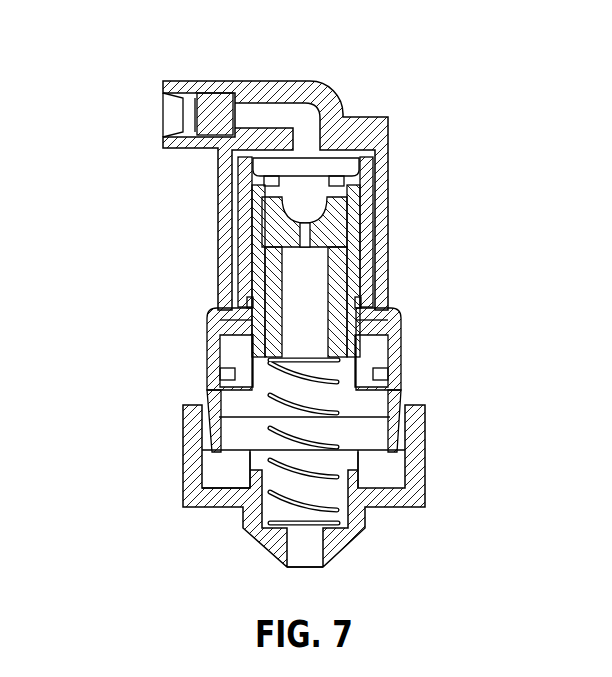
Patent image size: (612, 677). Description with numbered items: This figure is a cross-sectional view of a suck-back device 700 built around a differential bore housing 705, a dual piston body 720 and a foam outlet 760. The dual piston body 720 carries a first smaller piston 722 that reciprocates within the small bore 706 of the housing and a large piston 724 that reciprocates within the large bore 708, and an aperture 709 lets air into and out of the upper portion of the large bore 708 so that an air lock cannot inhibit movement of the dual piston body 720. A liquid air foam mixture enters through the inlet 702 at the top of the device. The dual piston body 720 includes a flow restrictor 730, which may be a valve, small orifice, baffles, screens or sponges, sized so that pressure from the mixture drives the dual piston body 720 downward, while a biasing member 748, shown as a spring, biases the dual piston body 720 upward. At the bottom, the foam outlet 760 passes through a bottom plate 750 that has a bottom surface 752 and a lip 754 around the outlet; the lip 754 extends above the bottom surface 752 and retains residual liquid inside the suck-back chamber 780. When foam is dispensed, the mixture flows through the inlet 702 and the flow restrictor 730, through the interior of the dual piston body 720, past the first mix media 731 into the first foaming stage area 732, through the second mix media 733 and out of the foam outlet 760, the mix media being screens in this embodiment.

The suck-back device 700 is at (450, 27).
The inlet 702 is at (165, 118).
The differential bore housing 705 is at (408, 297).
The small bore 706 is at (362, 228).
The large bore 708 is at (400, 388).
The aperture 709 is at (212, 356).
The dual piston body 720 is at (355, 255).
The first smaller piston 722 is at (360, 172).
The large piston 724 is at (387, 377).
The flow restrictor 730 is at (312, 217).
The first mix media 731 is at (283, 250).
The first foaming stage area 732 is at (300, 290).
The second mix media 733 is at (262, 308).
The biasing member 748 is at (395, 432).
The bottom plate 750 is at (425, 455).
The bottom surface 752 is at (215, 488).
The lip 754 is at (253, 470).
The foam outlet 760 is at (300, 567).
The suck-back chamber 780 is at (390, 473).